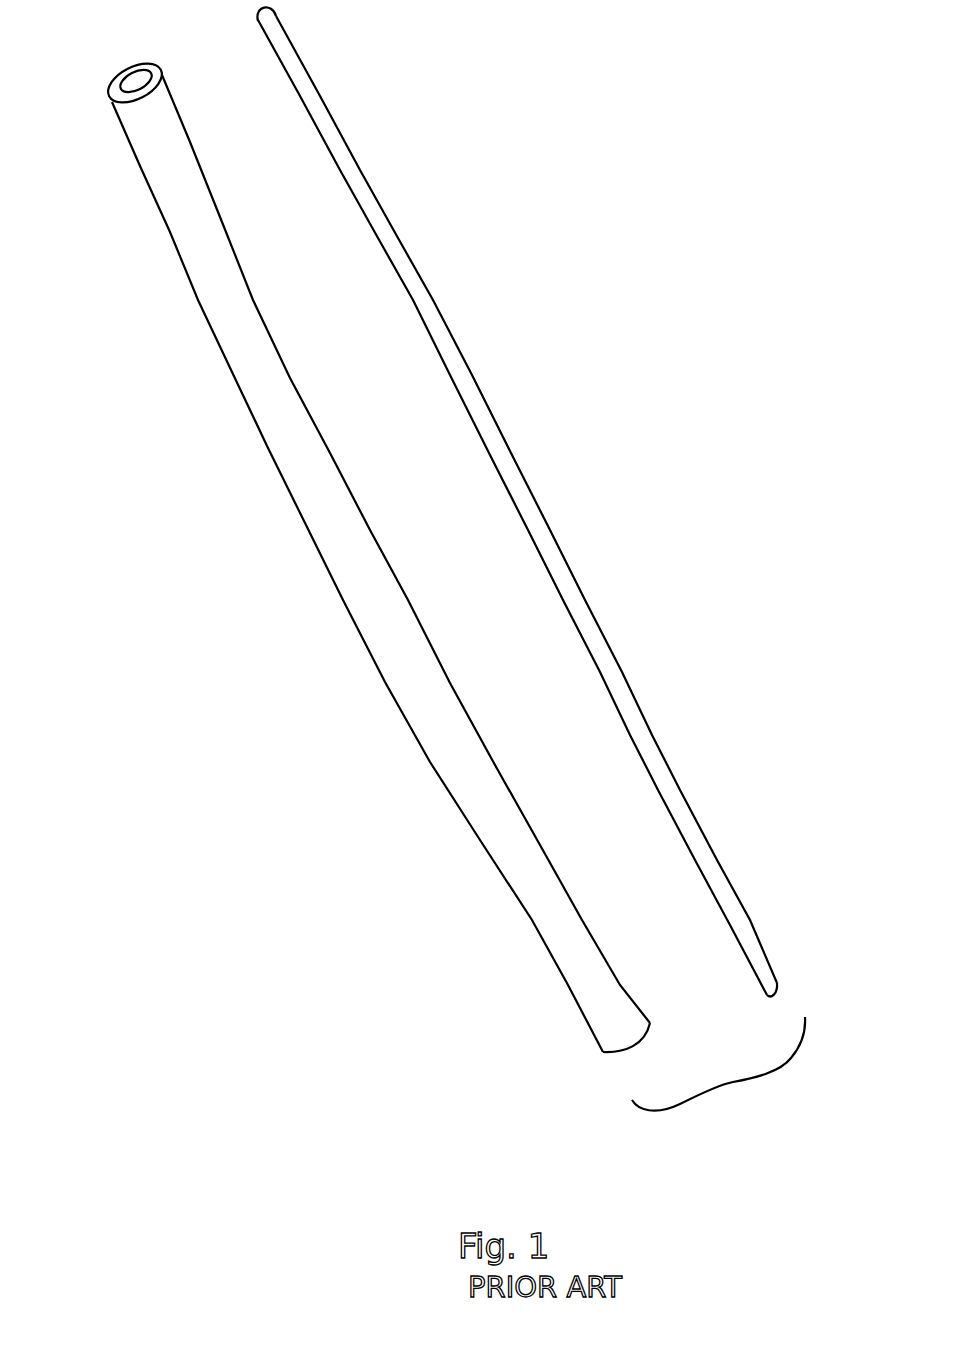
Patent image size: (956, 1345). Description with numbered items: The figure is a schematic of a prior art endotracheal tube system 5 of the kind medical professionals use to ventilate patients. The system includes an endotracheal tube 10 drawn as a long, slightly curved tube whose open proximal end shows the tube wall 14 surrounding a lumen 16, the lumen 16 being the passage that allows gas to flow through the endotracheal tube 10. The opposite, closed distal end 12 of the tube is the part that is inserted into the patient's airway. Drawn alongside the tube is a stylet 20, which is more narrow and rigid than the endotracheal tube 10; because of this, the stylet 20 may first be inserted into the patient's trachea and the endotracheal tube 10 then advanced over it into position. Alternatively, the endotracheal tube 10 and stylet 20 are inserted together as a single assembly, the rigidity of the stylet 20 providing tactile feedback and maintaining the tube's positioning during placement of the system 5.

The prior art endotracheal tube system 5 is at (733, 1082).
The endotracheal tube 10 is at (167, 225).
The distal end 12 is at (603, 1052).
The tube wall at open end 14 is at (110, 95).
The lumen 16 is at (143, 63).
The stylet 20 is at (298, 55).